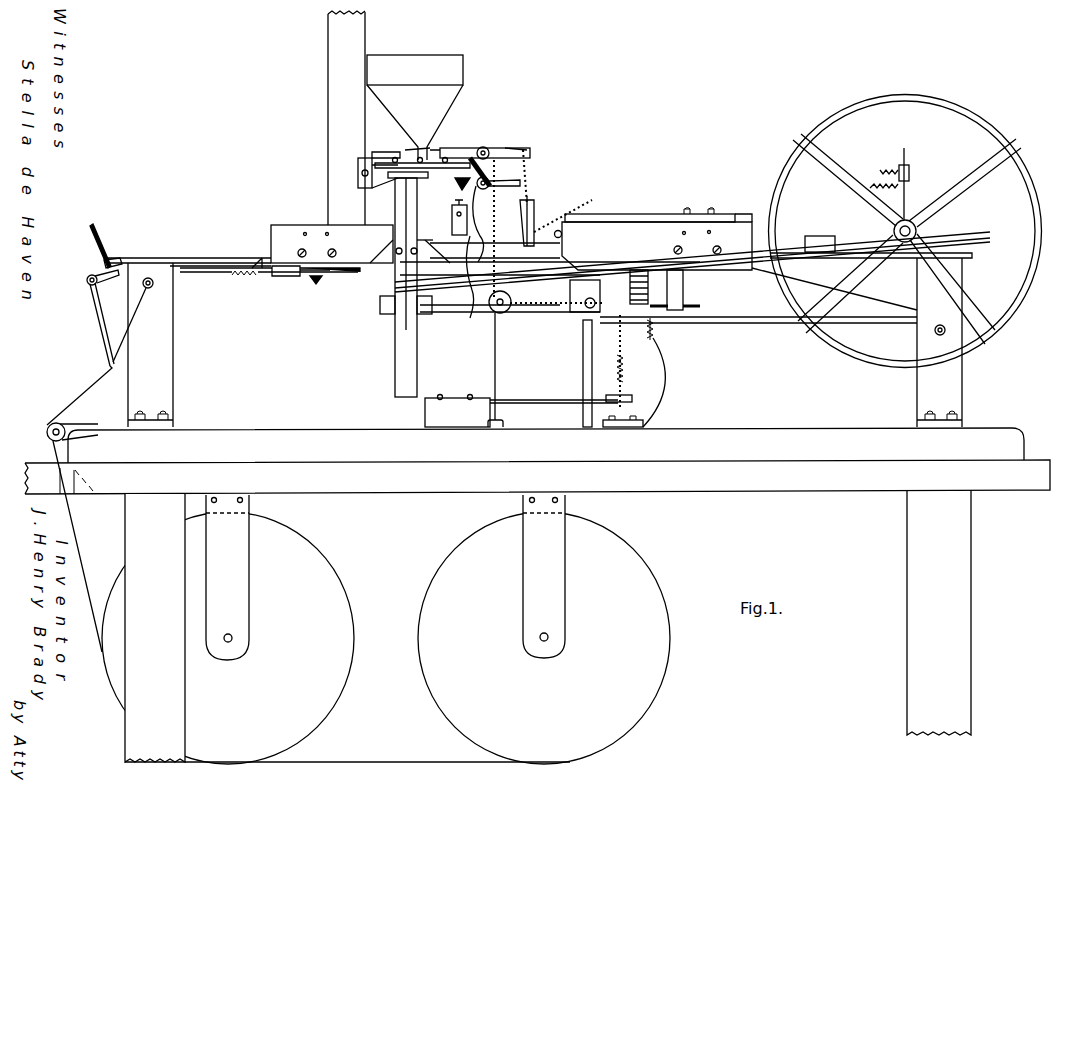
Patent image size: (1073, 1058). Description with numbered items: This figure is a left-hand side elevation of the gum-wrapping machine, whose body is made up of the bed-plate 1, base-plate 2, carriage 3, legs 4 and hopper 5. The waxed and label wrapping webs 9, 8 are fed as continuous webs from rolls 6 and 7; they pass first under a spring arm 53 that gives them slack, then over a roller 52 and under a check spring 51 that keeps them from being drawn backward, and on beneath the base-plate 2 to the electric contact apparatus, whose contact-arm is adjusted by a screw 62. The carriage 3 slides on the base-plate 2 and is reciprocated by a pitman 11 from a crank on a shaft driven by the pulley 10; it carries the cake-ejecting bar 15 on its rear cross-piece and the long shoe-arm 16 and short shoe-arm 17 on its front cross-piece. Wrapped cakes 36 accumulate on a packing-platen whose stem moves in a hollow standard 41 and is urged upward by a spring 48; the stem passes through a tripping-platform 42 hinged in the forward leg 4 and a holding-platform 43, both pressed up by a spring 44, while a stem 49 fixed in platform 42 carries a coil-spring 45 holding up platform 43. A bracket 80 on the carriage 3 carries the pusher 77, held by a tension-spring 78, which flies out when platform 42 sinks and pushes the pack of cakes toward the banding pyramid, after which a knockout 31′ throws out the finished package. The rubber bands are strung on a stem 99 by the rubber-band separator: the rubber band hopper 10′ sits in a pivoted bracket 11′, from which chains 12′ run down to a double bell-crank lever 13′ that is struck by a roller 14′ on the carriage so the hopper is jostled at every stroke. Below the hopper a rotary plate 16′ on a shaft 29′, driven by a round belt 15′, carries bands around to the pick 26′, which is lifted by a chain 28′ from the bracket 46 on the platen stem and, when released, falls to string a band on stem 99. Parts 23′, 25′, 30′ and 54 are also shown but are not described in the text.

The bed-plate 1 is at (537, 595).
The base-plate 2 is at (170, 258).
The carriage 3 is at (657, 246).
The legs 4 is at (545, 342).
The hopper 5 is at (346, 118).
The roll 6 is at (544, 629).
The roll 7 is at (228, 629).
The label sheet 8 is at (100, 318).
The waxed web 9 is at (96, 318).
The pulley 10 is at (1036, 265).
The rubber band hopper 10′ is at (415, 107).
The pitman 11 is at (875, 298).
The pivoted bracket 11′ is at (492, 153).
The chains 12′ is at (532, 178).
The double bell-crank lever 13′ is at (524, 232).
The projecting roller 14′ is at (563, 223).
The cake-ejecting bar 15 is at (262, 258).
The round belt 15′ is at (640, 270).
The long shoe-arm 16 is at (650, 211).
The rotary plate 16′ is at (368, 185).
The short shoe-arm 17 is at (740, 222).
The lever arm 23′ is at (484, 172).
The vertical post 25′ is at (406, 284).
The rubber-band pick 26′ is at (482, 177).
The chain 28′ is at (494, 196).
The shaft 29′ is at (431, 234).
The spring adjuster 30′ is at (910, 174).
The knockout 31′ is at (557, 294).
The cake 36 is at (632, 287).
The hollow standard 41 is at (624, 416).
The tripping-platform 42 is at (758, 320).
The holding-platform 43 is at (771, 325).
The spring 44 is at (668, 384).
The coil-spring 45 is at (653, 331).
The bracket 46 is at (626, 396).
The spring 48 is at (515, 403).
The stem 49 is at (616, 373).
The check spring 51 is at (96, 252).
The roller 52 is at (86, 282).
The spring arm 53 is at (130, 330).
The pulley 54 is at (62, 537).
The screw 62 is at (330, 285).
The pusher 77 is at (686, 306).
The tension-spring 78 is at (660, 294).
The bracket 80 is at (677, 290).
The stem 99 is at (452, 240).